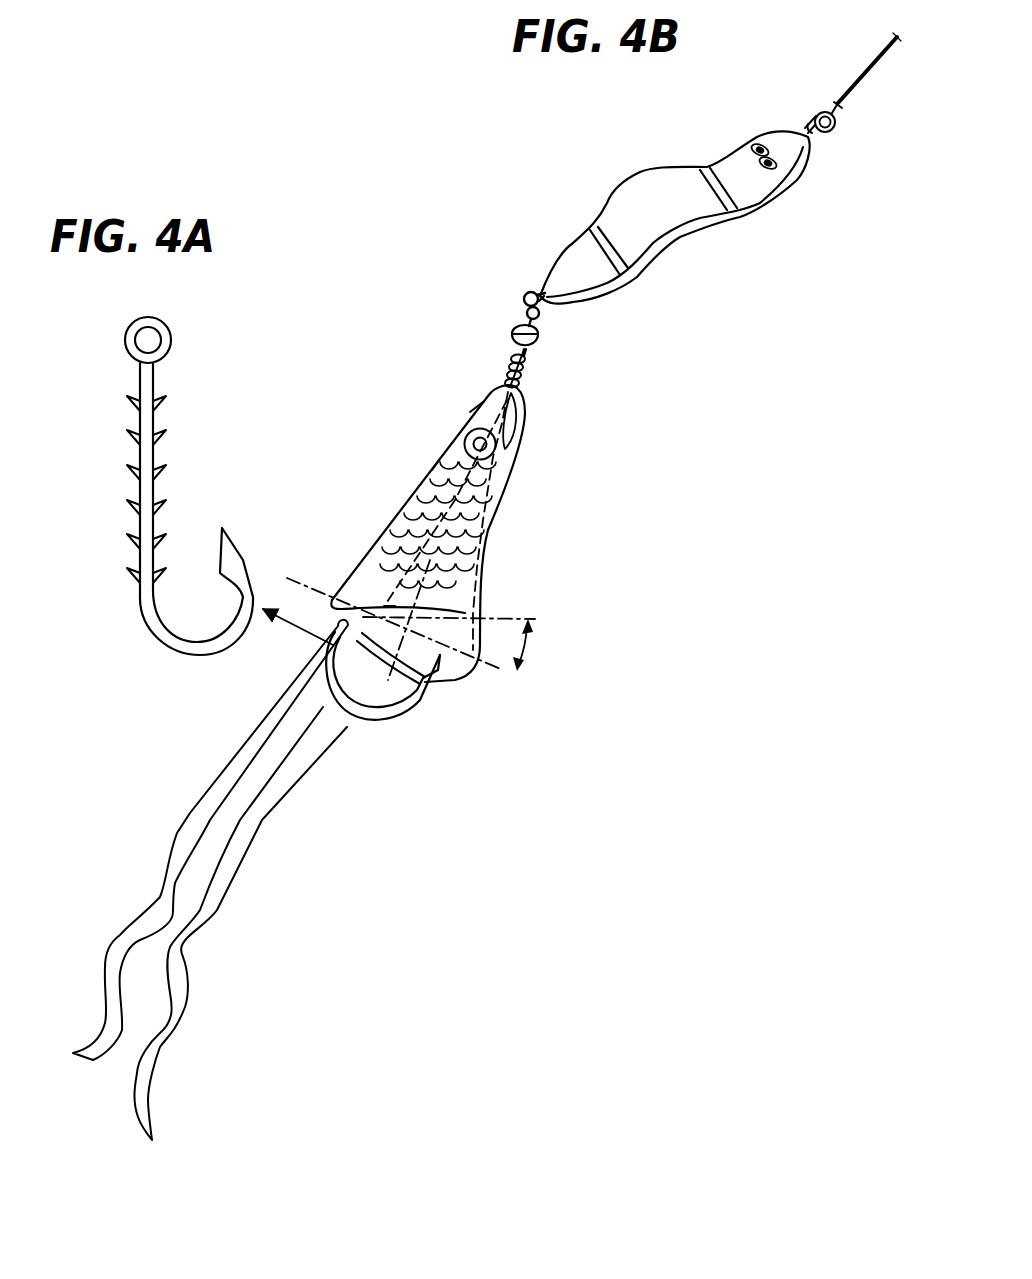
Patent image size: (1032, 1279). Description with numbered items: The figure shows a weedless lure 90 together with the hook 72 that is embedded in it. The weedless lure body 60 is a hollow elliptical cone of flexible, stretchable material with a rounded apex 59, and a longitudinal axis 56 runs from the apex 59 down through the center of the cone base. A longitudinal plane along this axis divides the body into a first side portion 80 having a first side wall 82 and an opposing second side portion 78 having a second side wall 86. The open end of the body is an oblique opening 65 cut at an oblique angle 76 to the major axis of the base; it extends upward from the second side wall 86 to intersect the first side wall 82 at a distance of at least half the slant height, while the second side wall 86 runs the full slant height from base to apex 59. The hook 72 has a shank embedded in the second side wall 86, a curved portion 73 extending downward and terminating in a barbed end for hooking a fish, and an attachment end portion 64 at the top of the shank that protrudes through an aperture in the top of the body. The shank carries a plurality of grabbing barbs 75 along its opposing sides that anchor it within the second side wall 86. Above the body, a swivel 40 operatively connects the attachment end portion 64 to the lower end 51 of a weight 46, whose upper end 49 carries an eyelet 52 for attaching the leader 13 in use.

In FIG. 4B, the leader 13 is at (871, 62).
In FIG. 4B, the swivel 40 is at (539, 339).
In FIG. 4B, the weight 46 is at (731, 146).
In FIG. 4B, the upper end 49 is at (805, 120).
In FIG. 4B, the lower end 51 is at (537, 283).
In FIG. 4B, the eyelet 52 is at (836, 133).
In FIG. 4B, the longitudinal axis 56 is at (502, 412).
In FIG. 4B, the apex 59 is at (509, 391).
In FIG. 4B, the weedless lure body 60 is at (451, 424).
In FIG. 4B, the attachment end portion 64 is at (522, 386).
In FIG. 4B, the oblique opening 65 is at (390, 608).
In FIG. 4A, the hook 72 is at (121, 311).
In FIG. 4B, the hook 72 is at (418, 709).
In FIG. 4B, the curved portion 73 is at (347, 708).
In FIG. 4A, the grabbing barbs 75 is at (132, 402).
In FIG. 4B, the oblique angle 76 is at (529, 649).
In FIG. 4B, the second side portion 78 is at (429, 468).
In FIG. 4B, the first side portion 80 is at (522, 445).
In FIG. 4B, the first side wall 82 is at (518, 479).
In FIG. 4B, the second side wall 86 is at (403, 507).
In FIG. 4B, the weedless lure 90 is at (376, 317).